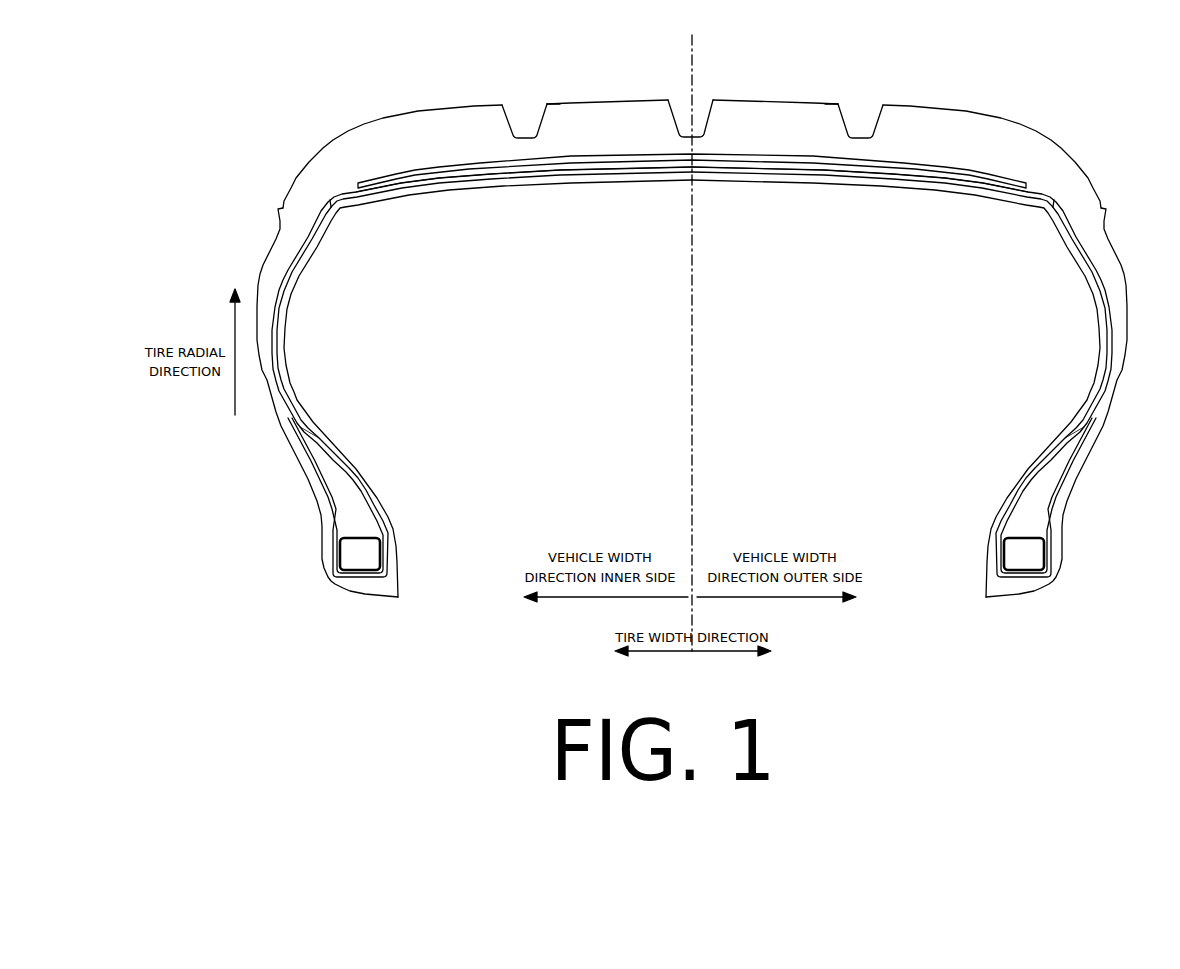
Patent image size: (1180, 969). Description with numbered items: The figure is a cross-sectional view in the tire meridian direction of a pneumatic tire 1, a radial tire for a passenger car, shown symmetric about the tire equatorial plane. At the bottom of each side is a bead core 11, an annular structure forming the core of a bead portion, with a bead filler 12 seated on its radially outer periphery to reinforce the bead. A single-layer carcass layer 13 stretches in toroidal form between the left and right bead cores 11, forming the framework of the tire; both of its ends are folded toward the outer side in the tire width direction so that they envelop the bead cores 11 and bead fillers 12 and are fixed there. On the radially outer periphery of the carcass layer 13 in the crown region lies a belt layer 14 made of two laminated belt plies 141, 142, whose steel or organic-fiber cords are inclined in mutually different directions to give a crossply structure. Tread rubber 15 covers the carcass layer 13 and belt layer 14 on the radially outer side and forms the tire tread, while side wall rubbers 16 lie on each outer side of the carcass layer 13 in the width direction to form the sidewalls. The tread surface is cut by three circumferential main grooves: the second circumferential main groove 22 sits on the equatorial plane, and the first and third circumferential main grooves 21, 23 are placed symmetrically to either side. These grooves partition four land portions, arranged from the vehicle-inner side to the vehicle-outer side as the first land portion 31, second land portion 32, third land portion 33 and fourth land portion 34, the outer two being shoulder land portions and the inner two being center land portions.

The pneumatic tire 1 is at (990, 63).
The bead core 11 is at (372, 558).
The bead filler 12 is at (365, 513).
The carcass layer 13 is at (1097, 308).
The belt layer 14 is at (918, 268).
The belt ply 141 is at (978, 186).
The belt ply 142 is at (945, 178).
The tread rubber 15 is at (1066, 153).
The side wall rubber 16 is at (260, 282).
The first circumferential main groove 21 is at (522, 113).
The second circumferential main groove 22 is at (701, 109).
The third circumferential main groove 23 is at (863, 112).
The first land portion 31 is at (462, 118).
The second land portion 32 is at (572, 113).
The third land portion 33 is at (818, 111).
The fourth land portion 34 is at (920, 118).